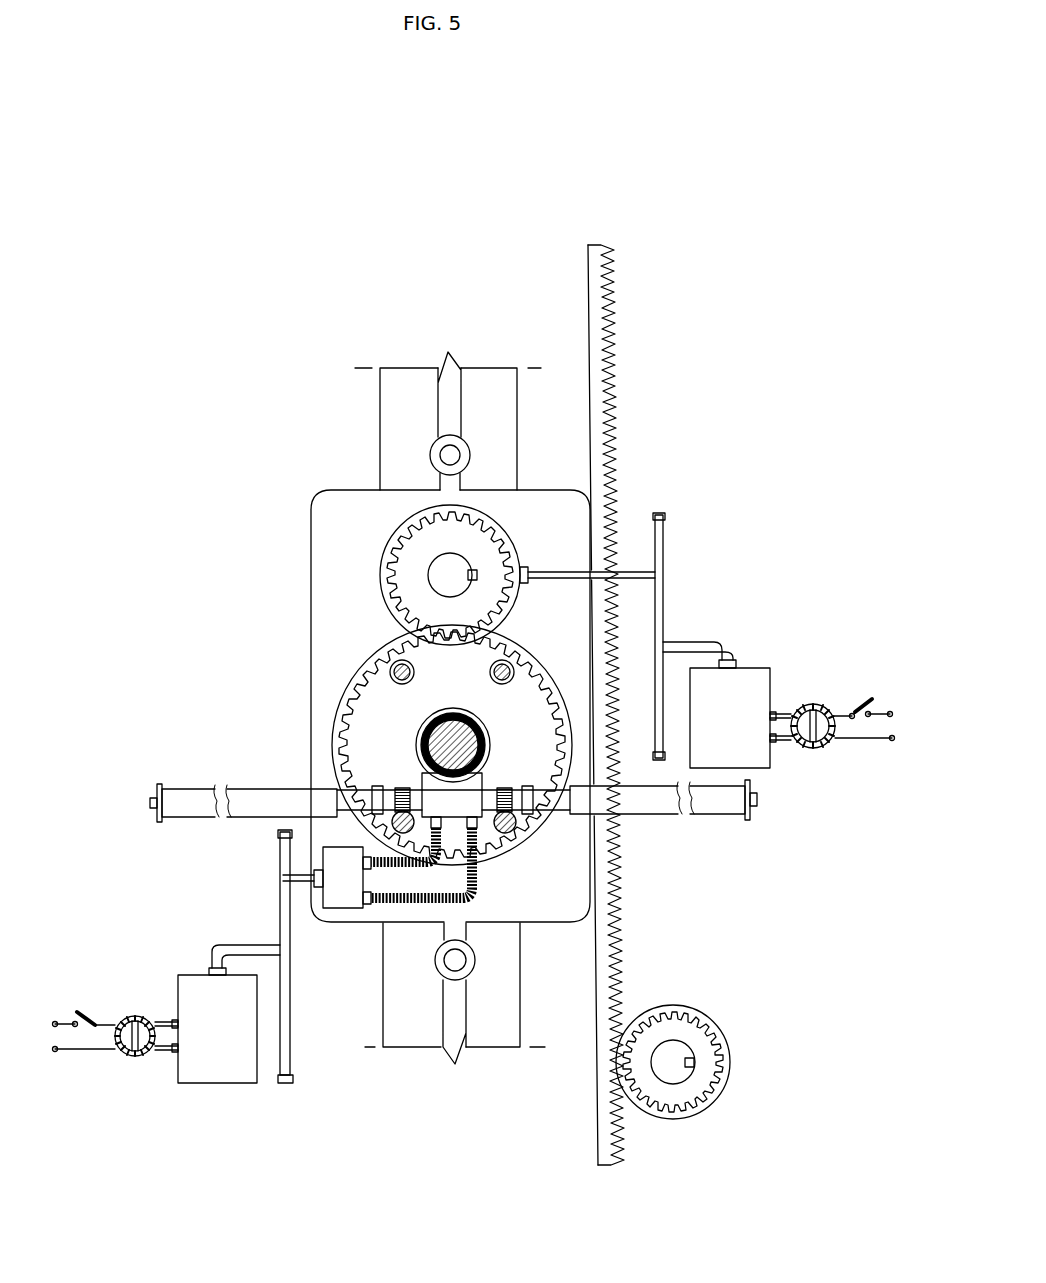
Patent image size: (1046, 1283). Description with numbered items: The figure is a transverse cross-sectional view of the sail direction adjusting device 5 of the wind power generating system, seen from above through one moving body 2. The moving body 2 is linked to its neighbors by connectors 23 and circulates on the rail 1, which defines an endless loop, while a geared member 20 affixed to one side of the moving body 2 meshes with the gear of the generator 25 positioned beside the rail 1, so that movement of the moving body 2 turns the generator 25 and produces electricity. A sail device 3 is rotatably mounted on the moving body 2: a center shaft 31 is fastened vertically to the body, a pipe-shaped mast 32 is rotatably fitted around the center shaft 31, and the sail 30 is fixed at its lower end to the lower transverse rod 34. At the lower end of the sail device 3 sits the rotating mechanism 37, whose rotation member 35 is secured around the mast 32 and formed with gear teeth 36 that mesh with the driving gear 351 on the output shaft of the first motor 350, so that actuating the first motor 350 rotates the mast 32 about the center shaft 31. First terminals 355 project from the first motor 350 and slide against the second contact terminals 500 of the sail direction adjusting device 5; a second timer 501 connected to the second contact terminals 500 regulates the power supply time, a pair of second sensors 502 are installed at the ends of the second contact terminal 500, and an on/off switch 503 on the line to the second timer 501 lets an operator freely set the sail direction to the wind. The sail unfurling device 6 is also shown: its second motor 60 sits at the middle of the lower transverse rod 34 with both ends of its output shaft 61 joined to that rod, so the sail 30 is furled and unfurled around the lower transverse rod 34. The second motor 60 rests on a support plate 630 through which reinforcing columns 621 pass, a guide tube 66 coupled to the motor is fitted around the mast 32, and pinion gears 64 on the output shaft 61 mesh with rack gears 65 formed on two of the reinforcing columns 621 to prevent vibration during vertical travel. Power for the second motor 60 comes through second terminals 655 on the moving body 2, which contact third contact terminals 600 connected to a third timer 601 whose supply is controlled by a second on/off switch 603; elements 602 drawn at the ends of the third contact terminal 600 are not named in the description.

The rail 1 is at (434, 734).
The moving body 2 is at (307, 545).
The sail device 3 is at (291, 752).
The sail direction adjusting device 5 is at (781, 616).
The sail unfurling device 6 is at (377, 740).
The geared member 20 is at (613, 346).
The connector 23 is at (447, 397).
The generator 25 is at (730, 1033).
The sail 30 is at (470, 797).
The center shaft 31 is at (427, 736).
The mast 32 is at (490, 745).
The lower transverse rod 34 is at (158, 792).
The rotation member 35 is at (448, 730).
The gear teeth 36 is at (448, 739).
The rotating mechanism 37 is at (352, 657).
The second motor 60 is at (481, 790).
The output shaft 61 is at (512, 800).
The pinion gear 64 is at (400, 796).
The rack gear 65 is at (520, 840).
The guide tube 66 is at (467, 726).
The first motor 350 is at (424, 573).
The driving gear 351 is at (396, 548).
The first terminal 355 is at (640, 579).
The second contact terminal 500 is at (683, 612).
The second timer 501 is at (812, 704).
The second sensor 502 is at (656, 513).
The on/off switch 503 is at (880, 704).
The third contact terminal 600 is at (324, 963).
The third timer 601 is at (134, 1016).
The pivot pin 602 is at (294, 1079).
The second on/off switch 603 is at (75, 1008).
The reinforcing column 621 is at (416, 668).
The support plate 630 is at (393, 657).
The second terminal 655 is at (300, 882).